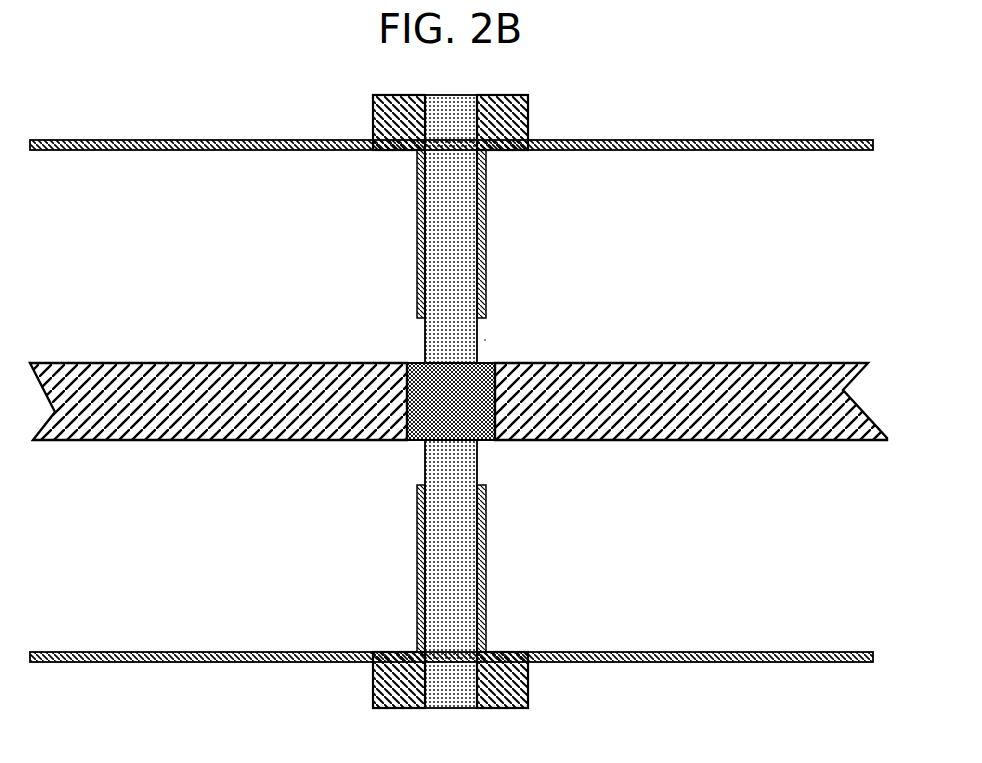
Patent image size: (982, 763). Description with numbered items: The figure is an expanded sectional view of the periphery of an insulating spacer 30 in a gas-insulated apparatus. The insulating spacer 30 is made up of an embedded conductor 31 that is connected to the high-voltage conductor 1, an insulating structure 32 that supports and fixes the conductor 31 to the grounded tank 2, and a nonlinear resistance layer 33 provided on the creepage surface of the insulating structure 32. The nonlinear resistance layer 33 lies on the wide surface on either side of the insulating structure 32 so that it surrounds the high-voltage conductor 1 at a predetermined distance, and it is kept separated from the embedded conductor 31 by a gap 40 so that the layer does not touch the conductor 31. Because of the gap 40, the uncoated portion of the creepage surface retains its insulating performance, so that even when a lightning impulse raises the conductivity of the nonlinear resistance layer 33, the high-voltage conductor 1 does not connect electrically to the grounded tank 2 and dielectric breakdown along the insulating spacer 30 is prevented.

The high-voltage conductor 1 is at (148, 363).
The grounded tank 2 is at (178, 140).
The insulating spacer 30 is at (424, 401).
The conductor 31 is at (420, 372).
The insulating structure 32 is at (440, 340).
The nonlinear resistance layer 33 is at (332, 357).
The gap 40 is at (485, 340).